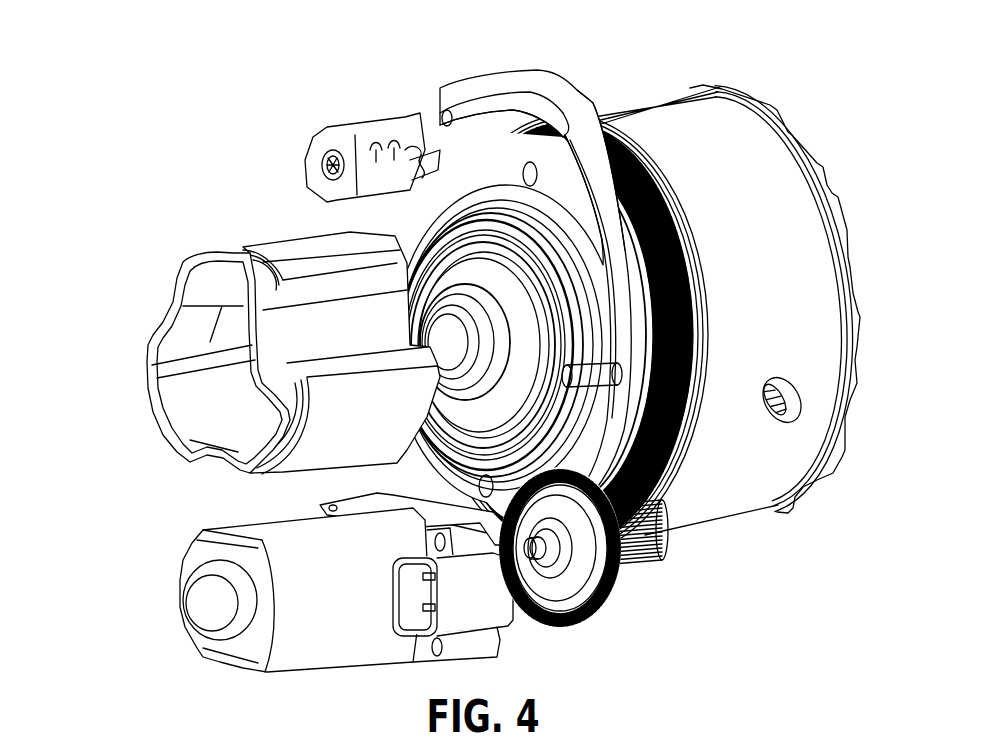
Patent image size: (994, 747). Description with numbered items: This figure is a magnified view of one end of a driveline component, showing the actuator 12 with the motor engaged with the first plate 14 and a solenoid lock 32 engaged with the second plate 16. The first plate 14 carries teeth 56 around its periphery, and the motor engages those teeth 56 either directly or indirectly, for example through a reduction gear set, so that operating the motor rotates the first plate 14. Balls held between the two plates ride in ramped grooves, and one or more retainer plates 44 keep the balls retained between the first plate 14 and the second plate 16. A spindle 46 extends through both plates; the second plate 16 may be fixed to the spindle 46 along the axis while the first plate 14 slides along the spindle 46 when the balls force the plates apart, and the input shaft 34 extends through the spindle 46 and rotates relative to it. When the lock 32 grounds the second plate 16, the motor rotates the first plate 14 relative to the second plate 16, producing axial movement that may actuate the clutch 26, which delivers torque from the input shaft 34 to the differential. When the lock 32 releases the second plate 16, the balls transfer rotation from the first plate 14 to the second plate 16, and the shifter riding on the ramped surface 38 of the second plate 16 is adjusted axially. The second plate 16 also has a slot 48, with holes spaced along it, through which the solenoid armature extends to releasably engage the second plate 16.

The actuator 12 is at (324, 115).
The first plate 14 is at (665, 458).
The second plate 16 is at (438, 105).
The clutch 26 is at (737, 478).
The lock 32 is at (307, 160).
The input shaft 34 is at (153, 413).
The ramped surface 38 is at (545, 62).
The retainer plate 44 is at (797, 488).
The spindle 46 is at (458, 318).
The slot 48 is at (510, 102).
The teeth 56 is at (628, 150).